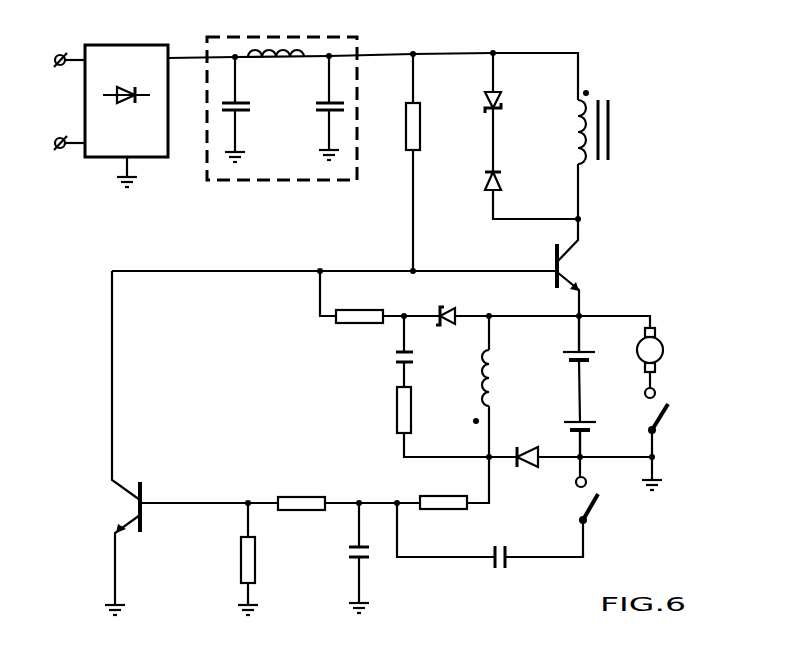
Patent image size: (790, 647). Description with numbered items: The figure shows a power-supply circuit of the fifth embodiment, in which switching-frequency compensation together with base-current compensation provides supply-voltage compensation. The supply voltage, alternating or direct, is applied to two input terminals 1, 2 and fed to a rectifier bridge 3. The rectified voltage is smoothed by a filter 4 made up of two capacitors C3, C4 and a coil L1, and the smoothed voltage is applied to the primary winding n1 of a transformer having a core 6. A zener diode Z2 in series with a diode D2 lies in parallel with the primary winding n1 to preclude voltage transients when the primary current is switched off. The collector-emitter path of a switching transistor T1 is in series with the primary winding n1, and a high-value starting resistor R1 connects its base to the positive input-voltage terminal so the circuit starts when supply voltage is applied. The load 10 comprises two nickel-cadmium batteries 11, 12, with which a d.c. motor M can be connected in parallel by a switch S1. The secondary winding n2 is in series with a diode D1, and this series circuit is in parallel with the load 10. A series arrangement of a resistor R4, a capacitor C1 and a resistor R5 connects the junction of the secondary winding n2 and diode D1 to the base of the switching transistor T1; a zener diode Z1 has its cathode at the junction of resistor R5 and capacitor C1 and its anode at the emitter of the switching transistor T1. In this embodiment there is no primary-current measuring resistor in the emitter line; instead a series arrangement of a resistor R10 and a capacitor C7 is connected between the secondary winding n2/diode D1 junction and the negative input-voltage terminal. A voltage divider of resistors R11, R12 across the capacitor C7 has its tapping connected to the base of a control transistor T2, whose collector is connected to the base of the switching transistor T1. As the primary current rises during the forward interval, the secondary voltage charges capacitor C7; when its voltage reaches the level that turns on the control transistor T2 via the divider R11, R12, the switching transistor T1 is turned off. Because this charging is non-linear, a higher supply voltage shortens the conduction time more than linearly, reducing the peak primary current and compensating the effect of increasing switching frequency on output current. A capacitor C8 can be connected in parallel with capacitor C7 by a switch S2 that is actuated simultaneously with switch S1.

The input terminal 1 is at (59, 55).
The input terminal 2 is at (60, 138).
The rectifier bridge 3 is at (125, 45).
The filter 4 is at (251, 37).
The coil L1 is at (258, 59).
The capacitor C3 is at (240, 113).
The capacitor C4 is at (322, 113).
The resistor R1 is at (421, 115).
The zener diode Z2 is at (486, 104).
The diode D2 is at (487, 185).
The primary winding n1 is at (577, 123).
The core 6 is at (603, 92).
The switching transistor T1 is at (570, 265).
The resistor R5 is at (365, 310).
The zener diode Z1 is at (443, 307).
The capacitor C1 is at (396, 356).
The resistor R4 is at (412, 417).
The secondary winding n2 is at (483, 390).
The diode D1 is at (530, 451).
The nickel-cadmium battery 11 is at (587, 352).
The nickel-cadmium battery 12 is at (594, 431).
The load 10 is at (626, 396).
The d.c. motor M is at (664, 352).
The switch S1 is at (664, 414).
The switch S2 is at (597, 507).
The control transistor T2 is at (133, 504).
The resistor R11 is at (315, 497).
The resistor R10 is at (434, 496).
The resistor R12 is at (241, 554).
The capacitor C7 is at (349, 556).
The capacitor C8 is at (497, 545).